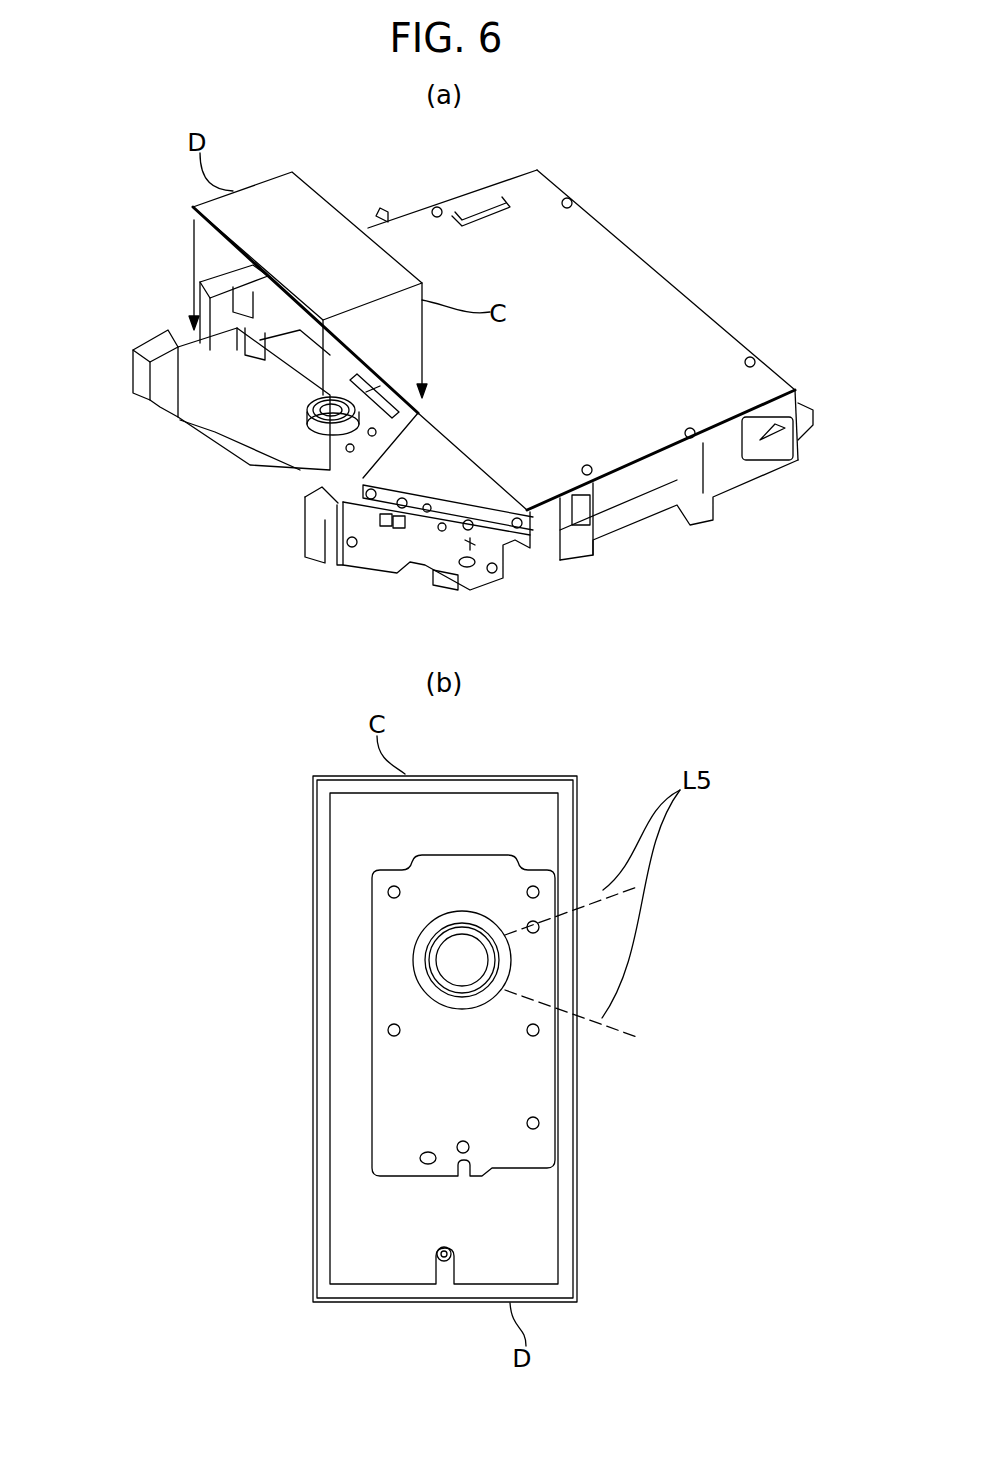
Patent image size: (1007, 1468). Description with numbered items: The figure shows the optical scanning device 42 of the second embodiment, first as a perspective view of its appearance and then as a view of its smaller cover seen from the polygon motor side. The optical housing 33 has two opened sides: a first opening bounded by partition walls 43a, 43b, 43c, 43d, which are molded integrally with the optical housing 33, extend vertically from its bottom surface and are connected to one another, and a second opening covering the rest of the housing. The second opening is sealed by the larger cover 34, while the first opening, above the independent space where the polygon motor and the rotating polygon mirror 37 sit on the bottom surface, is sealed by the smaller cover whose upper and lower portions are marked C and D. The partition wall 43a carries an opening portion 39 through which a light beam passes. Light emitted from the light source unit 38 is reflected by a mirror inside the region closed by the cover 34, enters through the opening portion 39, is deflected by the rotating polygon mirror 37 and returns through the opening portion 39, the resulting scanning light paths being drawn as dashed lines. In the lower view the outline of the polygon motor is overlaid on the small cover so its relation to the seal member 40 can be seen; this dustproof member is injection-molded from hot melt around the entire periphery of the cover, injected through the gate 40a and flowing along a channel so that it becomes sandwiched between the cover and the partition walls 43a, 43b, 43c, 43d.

The optical housing 33 is at (721, 467).
The cover 34 is at (638, 287).
The rotating polygon mirror 37 is at (313, 430).
The light source unit 38 is at (481, 548).
The opening portion 39 is at (421, 417).
The seal member 40 is at (505, 788).
The gate 40a is at (450, 1252).
The optical scanning device 42 is at (622, 168).
The partition wall 43a is at (333, 370).
The partition wall 43b is at (172, 391).
The partition wall 43c is at (247, 395).
The partition wall 43d is at (378, 440).